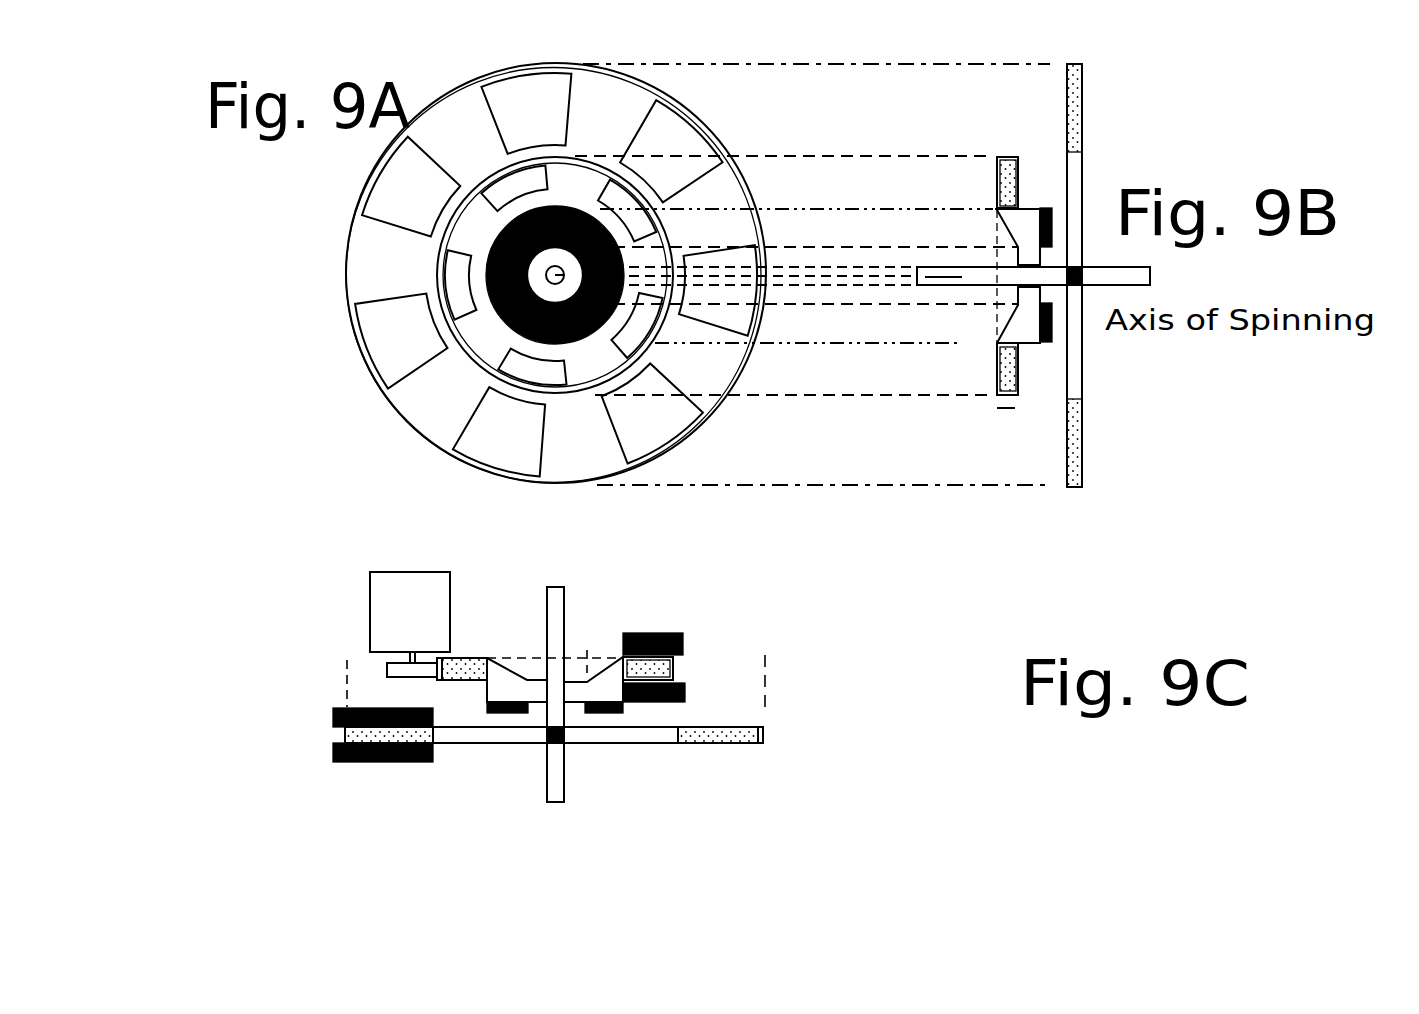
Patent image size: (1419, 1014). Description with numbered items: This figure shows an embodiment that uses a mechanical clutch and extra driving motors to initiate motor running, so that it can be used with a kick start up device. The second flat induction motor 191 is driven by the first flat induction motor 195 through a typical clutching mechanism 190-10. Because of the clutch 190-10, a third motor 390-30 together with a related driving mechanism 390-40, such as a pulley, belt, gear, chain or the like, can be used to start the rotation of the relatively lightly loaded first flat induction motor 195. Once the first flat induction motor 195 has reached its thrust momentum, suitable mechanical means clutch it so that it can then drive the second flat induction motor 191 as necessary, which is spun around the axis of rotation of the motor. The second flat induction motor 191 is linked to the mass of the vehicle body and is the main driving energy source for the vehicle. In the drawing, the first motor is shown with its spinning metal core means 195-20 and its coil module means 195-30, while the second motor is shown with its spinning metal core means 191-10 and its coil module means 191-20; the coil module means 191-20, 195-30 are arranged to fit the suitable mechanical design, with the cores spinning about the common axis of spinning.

In FIG. 9A, the second flat induction motor 191 is at (556, 273).
In FIG. 9A, the first flat induction motor 195 is at (555, 275).
In FIG. 9B, the clutching mechanism 190-10 is at (1045, 208).
In FIG. 9C, the clutching mechanism 190-10 is at (632, 704).
In FIG. 9B, the spinning metal core means 195-20 is at (1023, 335).
In FIG. 9C, the coil module means 195-30 is at (730, 618).
In FIG. 9C, the third motor 390-30 is at (403, 593).
In FIG. 9C, the driving mechanism 390-40 is at (392, 668).
In FIG. 9C, the spinning metal core means 191-10 is at (613, 733).
In FIG. 9C, the coil module means 191-20 is at (413, 803).